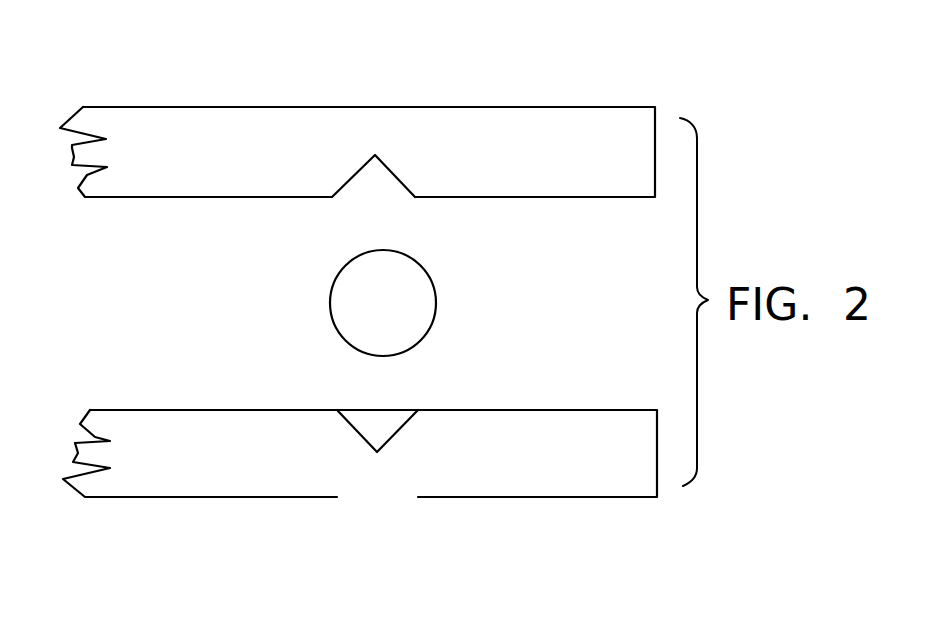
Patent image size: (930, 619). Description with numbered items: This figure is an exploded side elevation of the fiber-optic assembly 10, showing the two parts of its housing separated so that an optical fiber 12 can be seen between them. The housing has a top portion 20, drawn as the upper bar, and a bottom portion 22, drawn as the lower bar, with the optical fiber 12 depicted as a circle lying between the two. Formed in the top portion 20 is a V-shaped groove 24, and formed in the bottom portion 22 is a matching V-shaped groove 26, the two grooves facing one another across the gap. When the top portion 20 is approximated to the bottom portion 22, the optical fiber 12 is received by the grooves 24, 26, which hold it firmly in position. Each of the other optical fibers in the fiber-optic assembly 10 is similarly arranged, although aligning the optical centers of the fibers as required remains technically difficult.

The fiber-optic assembly 10 is at (127, 83).
The optical fiber 12 is at (428, 293).
The top portion 20 is at (250, 118).
The bottom portion 22 is at (212, 485).
The V-shaped groove 24 is at (368, 173).
The V-shaped groove 26 is at (397, 423).